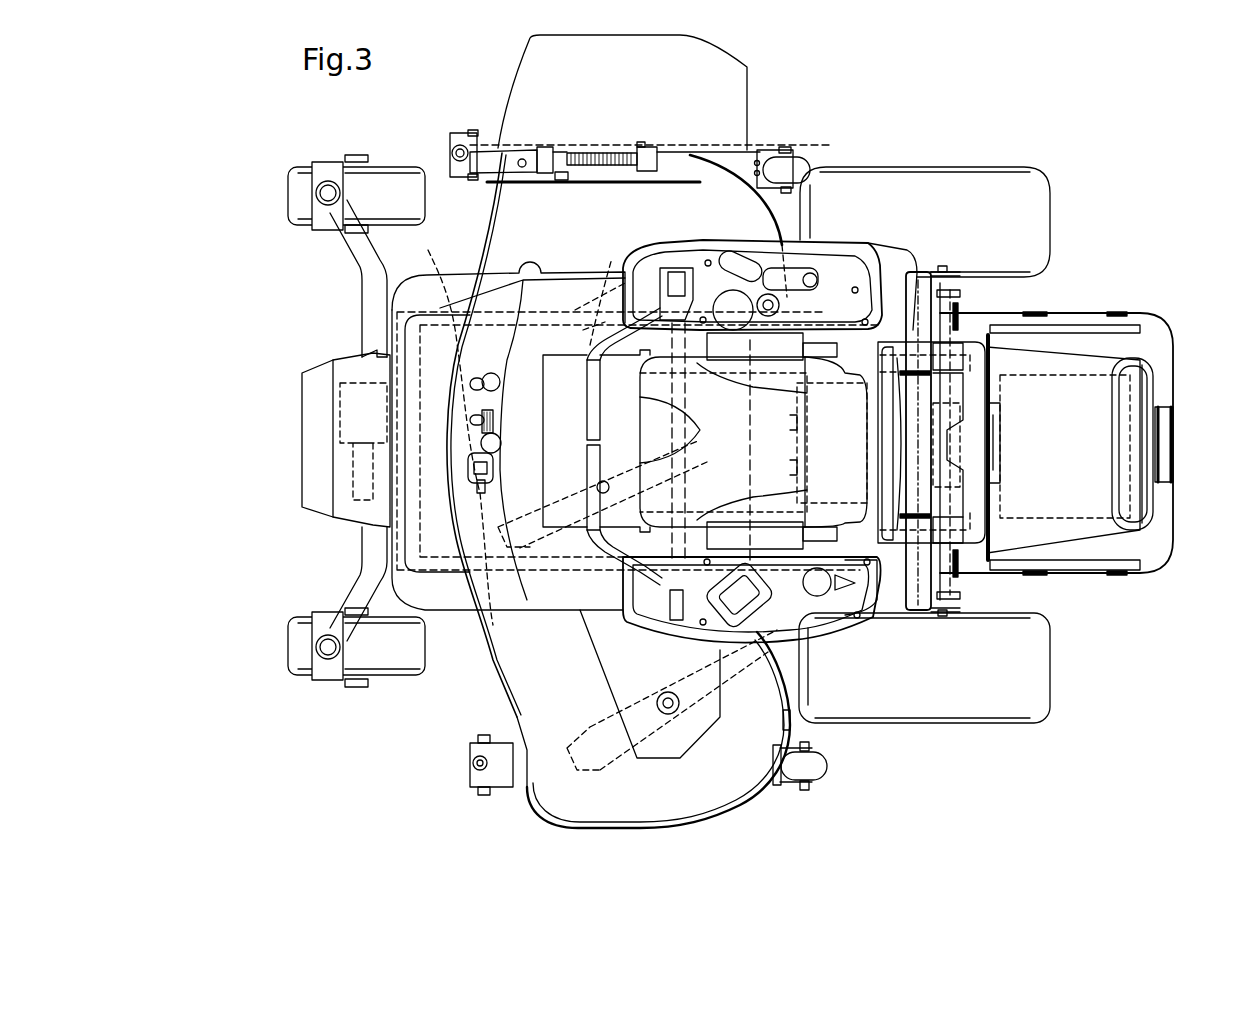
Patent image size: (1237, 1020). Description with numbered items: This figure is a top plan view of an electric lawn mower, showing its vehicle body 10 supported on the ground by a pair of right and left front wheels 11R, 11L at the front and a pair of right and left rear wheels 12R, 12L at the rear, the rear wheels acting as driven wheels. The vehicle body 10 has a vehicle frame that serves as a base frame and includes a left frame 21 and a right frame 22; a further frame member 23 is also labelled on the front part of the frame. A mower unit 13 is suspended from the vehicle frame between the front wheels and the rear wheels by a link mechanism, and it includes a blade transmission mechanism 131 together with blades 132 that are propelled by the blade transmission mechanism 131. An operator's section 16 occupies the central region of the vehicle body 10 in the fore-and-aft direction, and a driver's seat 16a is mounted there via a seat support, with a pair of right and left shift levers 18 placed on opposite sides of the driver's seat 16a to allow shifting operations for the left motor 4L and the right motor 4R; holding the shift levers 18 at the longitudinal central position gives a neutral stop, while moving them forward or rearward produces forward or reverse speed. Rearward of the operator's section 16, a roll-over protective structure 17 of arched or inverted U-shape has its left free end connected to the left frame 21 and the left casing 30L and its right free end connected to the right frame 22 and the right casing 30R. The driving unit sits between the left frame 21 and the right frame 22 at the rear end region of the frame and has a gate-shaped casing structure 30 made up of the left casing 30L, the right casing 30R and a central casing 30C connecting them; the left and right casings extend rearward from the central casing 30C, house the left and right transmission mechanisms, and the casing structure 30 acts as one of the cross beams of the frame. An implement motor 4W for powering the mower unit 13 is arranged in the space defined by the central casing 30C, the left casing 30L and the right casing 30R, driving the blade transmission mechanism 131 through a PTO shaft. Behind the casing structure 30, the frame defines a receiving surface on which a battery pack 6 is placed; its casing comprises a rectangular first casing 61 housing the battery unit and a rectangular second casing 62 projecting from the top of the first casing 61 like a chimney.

The vehicle body 10 is at (288, 152).
The operator's section 16 is at (463, 213).
The driver's seat 16a is at (597, 355).
The roll-over protective structure (ROPS) 17 is at (923, 288).
The shift levers 18 is at (590, 453).
The right front wheel 11R is at (296, 198).
The left front wheel 11L is at (296, 647).
The right rear wheel 12R is at (1043, 214).
The left rear wheel 12L is at (1043, 668).
The mower unit 13 is at (495, 700).
The blade transmission mechanism 131 is at (680, 750).
The blades 132 is at (600, 292).
The left frame 21 is at (490, 612).
The right frame 22 is at (448, 424).
The front bumper plate 23 is at (377, 347).
The right casing 30R is at (890, 317).
The left casing 30L is at (888, 565).
The central casing 30C is at (795, 443).
The casing structure 30 is at (863, 570).
The right motor 4R is at (790, 420).
The left motor 4L is at (795, 482).
The implement motor 4W is at (947, 443).
The battery pack 6 is at (1083, 570).
The first casing 61 is at (1143, 552).
The second casing 62 is at (1057, 373).